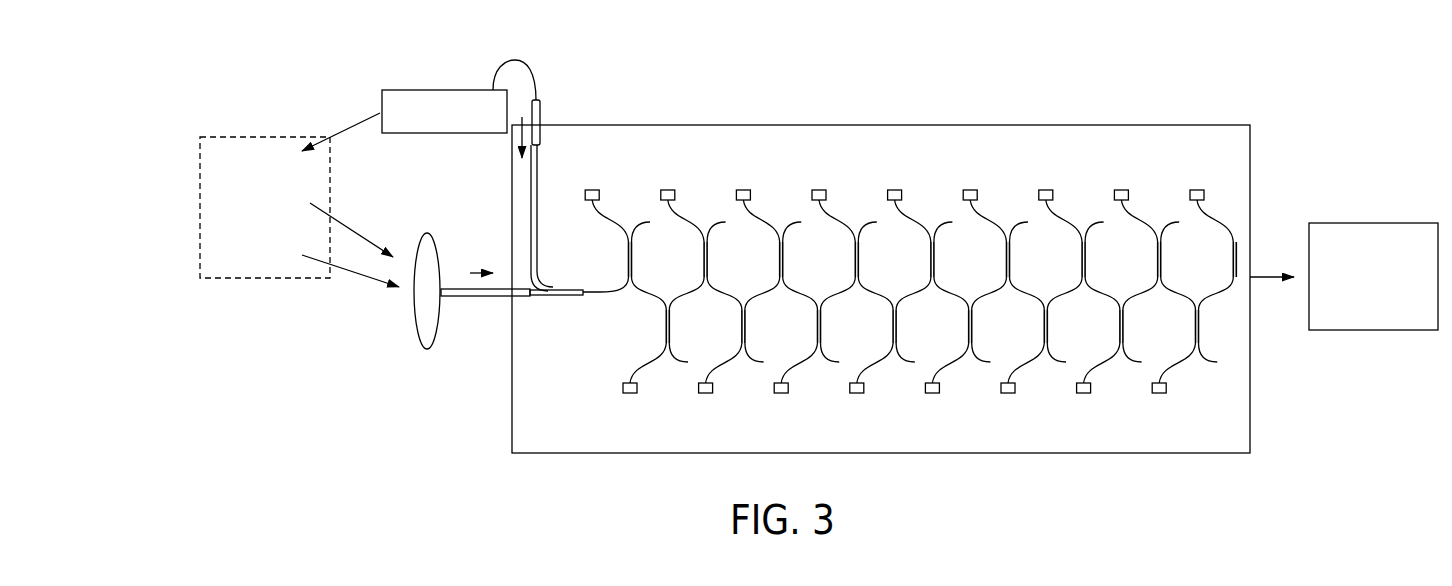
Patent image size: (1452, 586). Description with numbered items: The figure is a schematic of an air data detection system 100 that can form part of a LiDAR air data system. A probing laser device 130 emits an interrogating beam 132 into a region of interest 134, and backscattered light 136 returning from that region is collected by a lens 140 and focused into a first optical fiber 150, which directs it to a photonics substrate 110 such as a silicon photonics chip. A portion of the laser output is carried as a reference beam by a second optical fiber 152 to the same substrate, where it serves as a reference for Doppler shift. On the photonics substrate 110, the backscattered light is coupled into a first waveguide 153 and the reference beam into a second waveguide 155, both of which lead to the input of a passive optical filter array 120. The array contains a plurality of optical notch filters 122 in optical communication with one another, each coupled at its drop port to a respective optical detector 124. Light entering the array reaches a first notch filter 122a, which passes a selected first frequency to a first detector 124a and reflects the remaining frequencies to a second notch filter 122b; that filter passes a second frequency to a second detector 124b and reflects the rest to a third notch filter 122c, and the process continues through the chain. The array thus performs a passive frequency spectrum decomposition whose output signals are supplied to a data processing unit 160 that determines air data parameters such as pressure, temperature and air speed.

The air data detection system 100 is at (1024, 100).
The photonics substrate 110 is at (1183, 161).
The passive optical filter array 120 is at (634, 328).
The optical notch filter 122 is at (912, 223).
The first notch filter 122a is at (625, 255).
The second notch filter 122b is at (672, 333).
The third notch filter 122c is at (703, 255).
The optical detector 124 is at (820, 188).
The first detector 124a is at (597, 188).
The second detector 124b is at (628, 396).
The probing laser device 130 is at (437, 88).
The interrogating beam 132 is at (350, 126).
The region of interest 134 is at (198, 207).
The backscattered light 136 is at (347, 274).
The lens 140 is at (437, 346).
The first optical fiber 150 is at (462, 298).
The second optical fiber 152 is at (541, 112).
The first waveguide 153 is at (533, 298).
The second waveguide 155 is at (532, 202).
The data processing unit 160 is at (1372, 333).